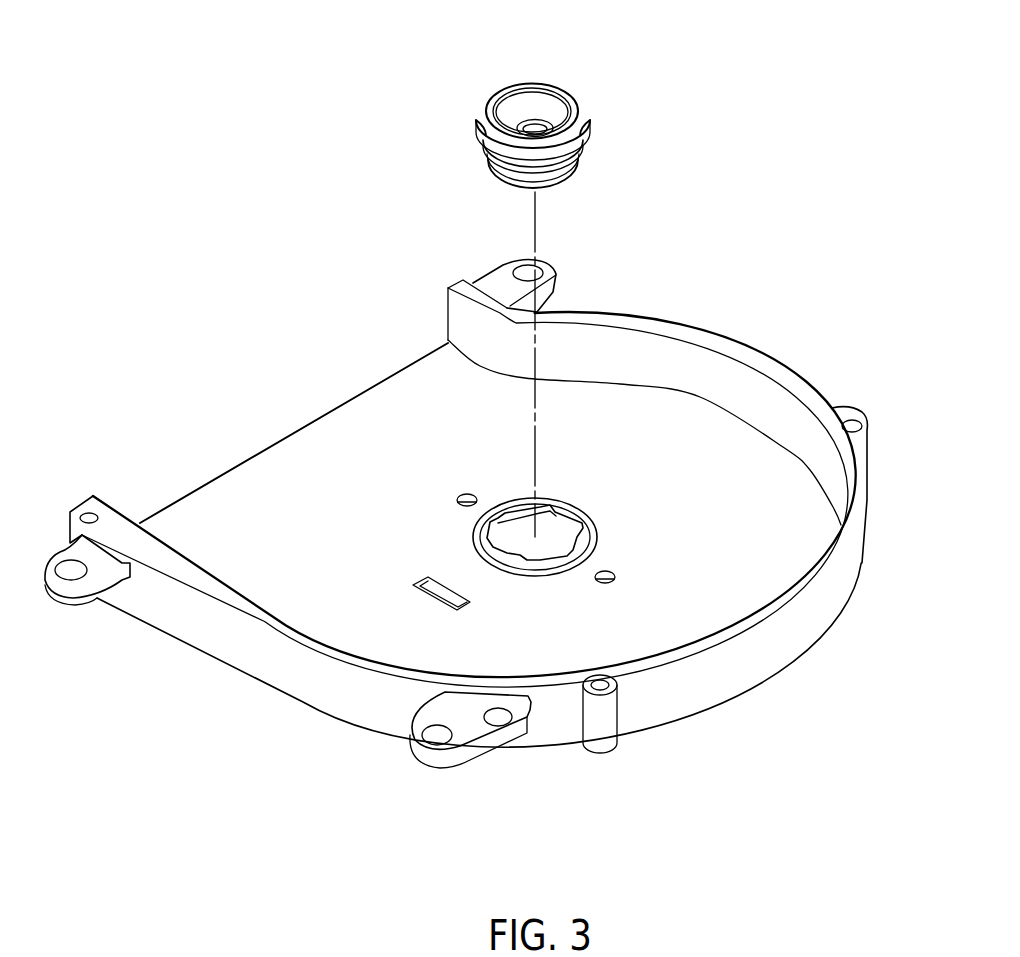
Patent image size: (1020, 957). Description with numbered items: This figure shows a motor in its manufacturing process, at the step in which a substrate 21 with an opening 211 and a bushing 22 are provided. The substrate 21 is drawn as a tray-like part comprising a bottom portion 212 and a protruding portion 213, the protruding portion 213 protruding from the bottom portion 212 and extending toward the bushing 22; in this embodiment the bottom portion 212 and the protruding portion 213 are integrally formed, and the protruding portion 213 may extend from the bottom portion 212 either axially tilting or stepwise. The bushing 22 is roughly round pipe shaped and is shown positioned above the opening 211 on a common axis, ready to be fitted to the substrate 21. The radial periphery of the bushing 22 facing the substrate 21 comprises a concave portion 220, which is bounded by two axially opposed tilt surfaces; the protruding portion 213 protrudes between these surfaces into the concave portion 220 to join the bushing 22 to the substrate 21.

The substrate 21 is at (747, 357).
The opening 211 is at (555, 528).
The bottom portion 212 is at (768, 463).
The protruding portion 213 is at (597, 527).
The bushing 22 is at (570, 98).
The concave portion 220 is at (548, 177).